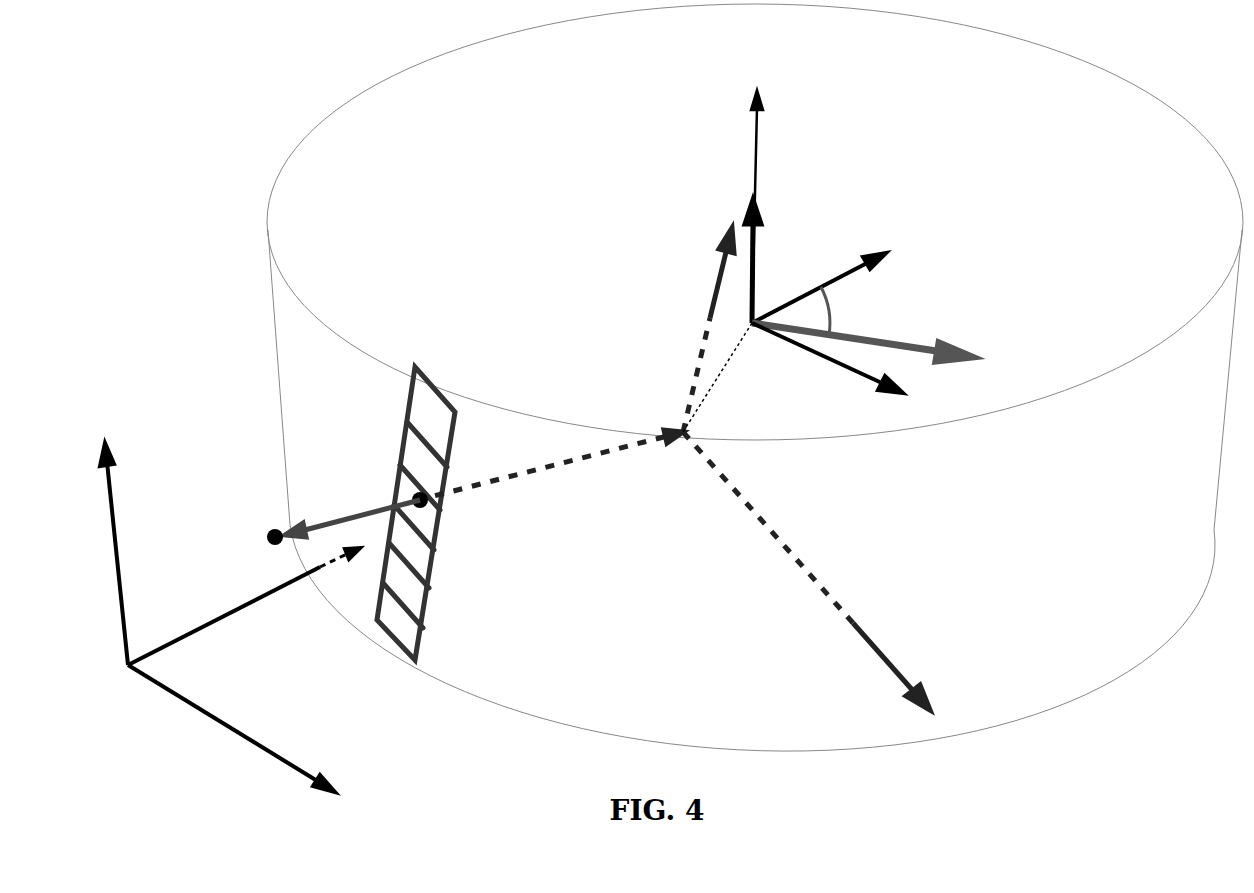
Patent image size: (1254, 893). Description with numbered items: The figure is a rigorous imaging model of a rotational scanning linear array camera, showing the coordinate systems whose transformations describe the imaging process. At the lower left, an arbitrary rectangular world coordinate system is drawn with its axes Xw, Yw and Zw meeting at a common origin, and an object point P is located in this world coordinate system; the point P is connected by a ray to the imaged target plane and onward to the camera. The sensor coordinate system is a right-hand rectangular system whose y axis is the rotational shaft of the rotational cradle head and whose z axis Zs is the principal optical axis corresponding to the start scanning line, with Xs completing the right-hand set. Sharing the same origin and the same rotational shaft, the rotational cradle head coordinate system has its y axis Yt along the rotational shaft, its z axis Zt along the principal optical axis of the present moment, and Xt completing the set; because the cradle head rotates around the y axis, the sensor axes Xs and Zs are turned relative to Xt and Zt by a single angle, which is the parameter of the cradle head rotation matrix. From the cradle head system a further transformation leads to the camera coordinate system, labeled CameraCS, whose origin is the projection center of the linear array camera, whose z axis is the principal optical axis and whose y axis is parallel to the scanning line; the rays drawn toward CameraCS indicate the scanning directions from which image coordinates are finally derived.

The world coordinate system z axis Zw is at (124, 542).
The world coordinate system x axis Xw is at (255, 730).
The world coordinate system y axis Yw is at (265, 594).
The object point P is at (343, 521).
The camera coordinate system CameraCS is at (694, 469).
The rotational cradle head coordinate system z axis Zt is at (717, 377).
The rotational cradle head coordinate system y axis Yt is at (768, 195).
The sensor coordinate system x axis Xs is at (835, 277).
The rotational cradle head coordinate system x axis Xt is at (877, 342).
The sensor coordinate system z axis Zs is at (845, 361).